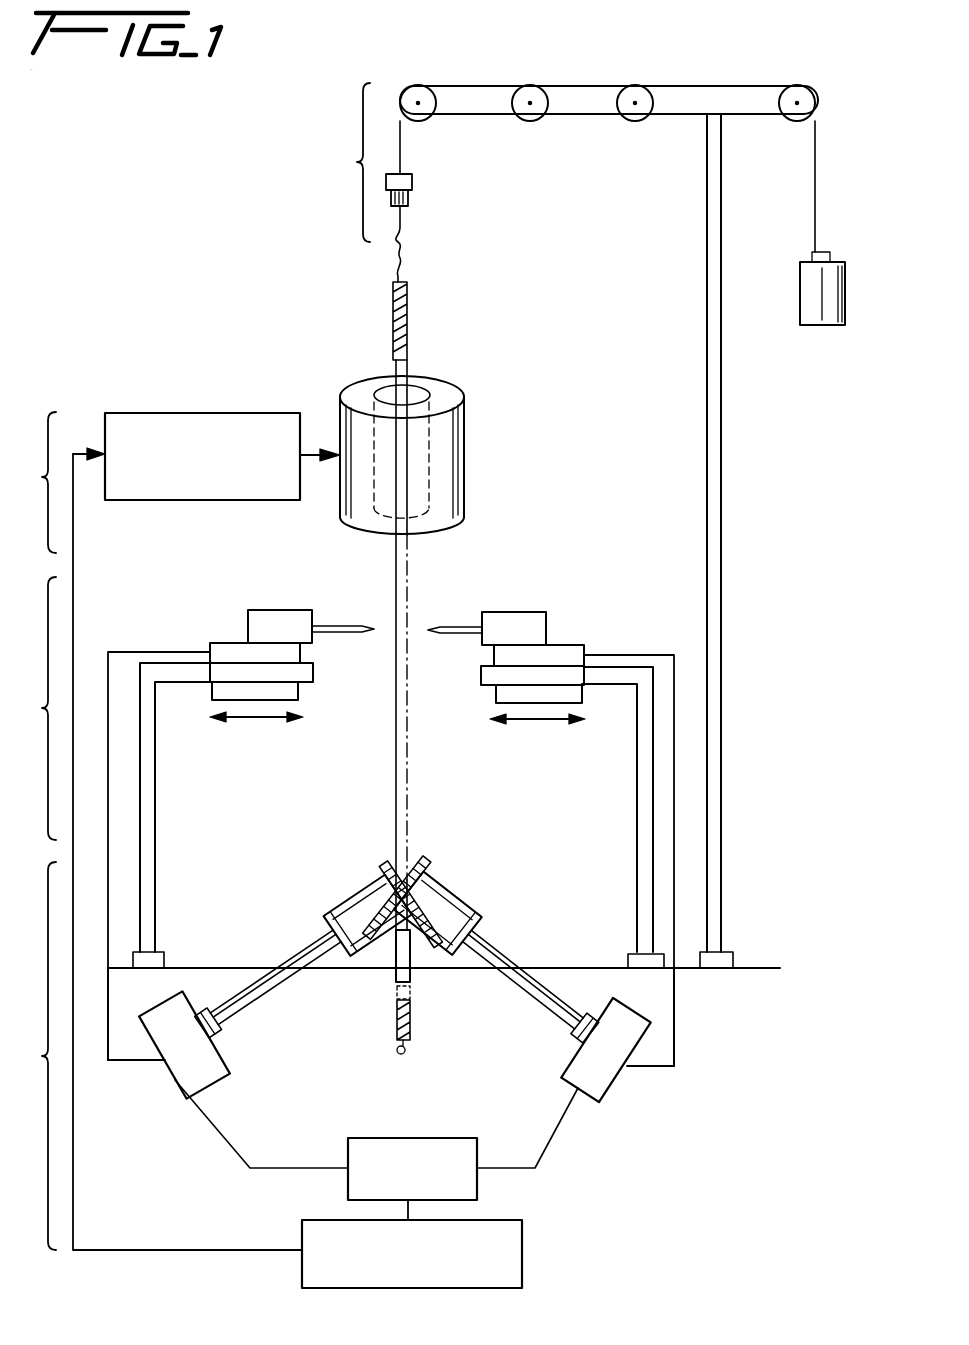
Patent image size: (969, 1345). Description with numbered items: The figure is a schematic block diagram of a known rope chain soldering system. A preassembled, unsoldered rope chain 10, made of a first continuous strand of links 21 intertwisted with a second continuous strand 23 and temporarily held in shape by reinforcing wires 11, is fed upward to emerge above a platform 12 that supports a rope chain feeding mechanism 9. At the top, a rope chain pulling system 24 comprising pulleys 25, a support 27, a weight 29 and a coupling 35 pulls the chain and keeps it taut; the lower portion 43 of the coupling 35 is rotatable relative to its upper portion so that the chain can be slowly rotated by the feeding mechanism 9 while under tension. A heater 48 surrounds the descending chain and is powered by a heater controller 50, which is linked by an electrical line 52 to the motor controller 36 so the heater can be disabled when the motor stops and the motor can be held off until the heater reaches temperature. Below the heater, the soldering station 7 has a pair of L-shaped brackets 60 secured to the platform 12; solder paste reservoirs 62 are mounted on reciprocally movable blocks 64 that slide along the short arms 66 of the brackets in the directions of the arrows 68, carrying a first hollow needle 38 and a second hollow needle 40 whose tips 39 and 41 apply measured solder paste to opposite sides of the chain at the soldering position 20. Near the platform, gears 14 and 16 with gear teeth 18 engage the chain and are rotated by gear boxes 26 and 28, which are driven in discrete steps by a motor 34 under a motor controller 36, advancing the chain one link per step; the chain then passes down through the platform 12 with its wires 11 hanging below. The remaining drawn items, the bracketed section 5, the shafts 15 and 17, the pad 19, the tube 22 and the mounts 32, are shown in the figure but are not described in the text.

The heating section 5 is at (40, 482).
The soldering station 7 is at (40, 708).
The rope chain feeding mechanism 9 is at (40, 1056).
The rope chain 10 is at (424, 313).
The reinforcing wires 11 is at (405, 264).
The platform 12 is at (748, 970).
The gear 14 is at (428, 881).
The right drive shaft 15 is at (494, 950).
The gear 16 is at (378, 876).
The left drive shaft 17 is at (290, 948).
The gear teeth 18 is at (424, 866).
The left gripping pad 19 is at (383, 866).
The soldering position 20 is at (409, 628).
The first continuous strand of links 21 is at (393, 307).
The guide tube 22 is at (410, 970).
The second continuous strand 23 is at (393, 308).
The rope chain pulling system 24 is at (344, 162).
The pulleys 25 is at (803, 124).
The gear box 26 is at (606, 1080).
The support 27 is at (706, 188).
The gear box 28 is at (215, 1060).
The weight 29 is at (800, 290).
The mounting bracket 32 is at (702, 1044).
The motor 34 is at (446, 1138).
The coupling 35 is at (412, 179).
The motor controller 36 is at (513, 1226).
The first solder-applying hollow needle 38 is at (468, 620).
The needle tip 39 is at (432, 634).
The second solder-applying hollow needle 40 is at (344, 626).
The needle tip 41 is at (372, 633).
The lower portion of the coupling 43 is at (408, 199).
The heater 48 is at (466, 448).
The heater controller 50 is at (254, 413).
The electrical line 52 is at (80, 450).
The L-shaped brackets 60 is at (638, 845).
The solder paste reservoirs 62 is at (505, 614).
The reciprocally movable blocks 64 is at (493, 692).
The short arms 66 is at (613, 686).
The arrows 68 is at (545, 722).